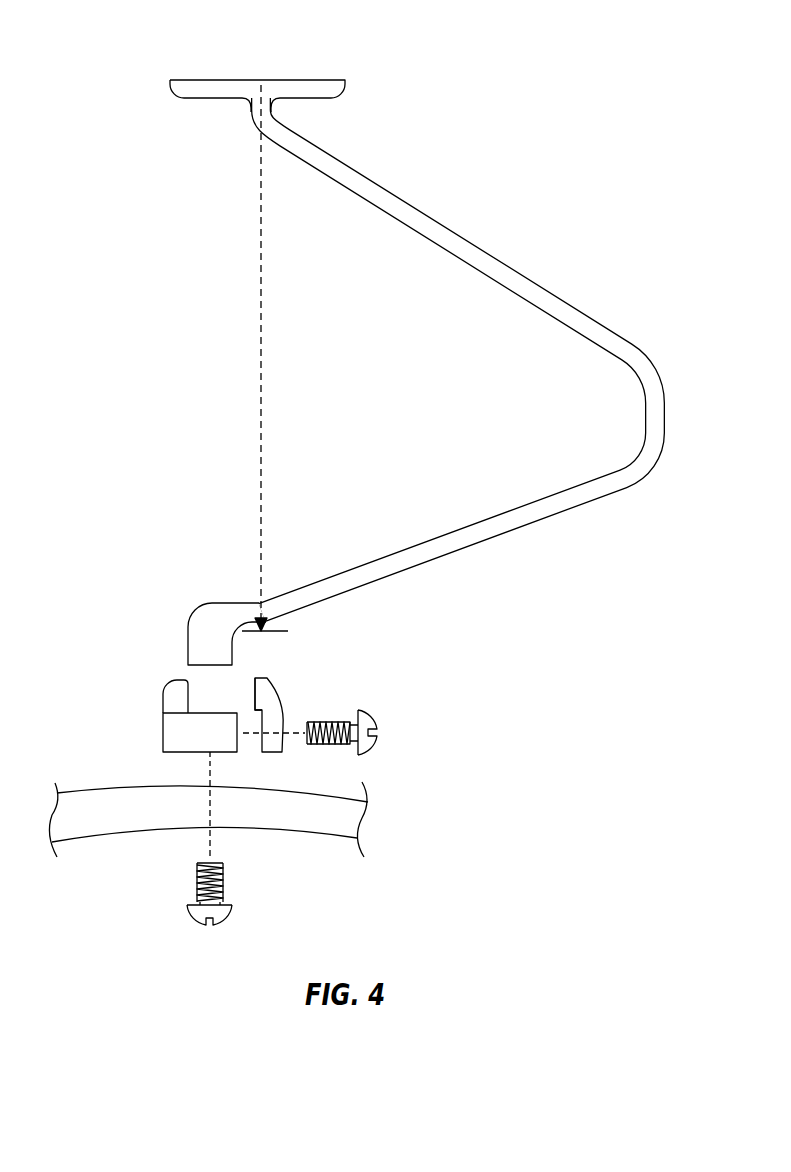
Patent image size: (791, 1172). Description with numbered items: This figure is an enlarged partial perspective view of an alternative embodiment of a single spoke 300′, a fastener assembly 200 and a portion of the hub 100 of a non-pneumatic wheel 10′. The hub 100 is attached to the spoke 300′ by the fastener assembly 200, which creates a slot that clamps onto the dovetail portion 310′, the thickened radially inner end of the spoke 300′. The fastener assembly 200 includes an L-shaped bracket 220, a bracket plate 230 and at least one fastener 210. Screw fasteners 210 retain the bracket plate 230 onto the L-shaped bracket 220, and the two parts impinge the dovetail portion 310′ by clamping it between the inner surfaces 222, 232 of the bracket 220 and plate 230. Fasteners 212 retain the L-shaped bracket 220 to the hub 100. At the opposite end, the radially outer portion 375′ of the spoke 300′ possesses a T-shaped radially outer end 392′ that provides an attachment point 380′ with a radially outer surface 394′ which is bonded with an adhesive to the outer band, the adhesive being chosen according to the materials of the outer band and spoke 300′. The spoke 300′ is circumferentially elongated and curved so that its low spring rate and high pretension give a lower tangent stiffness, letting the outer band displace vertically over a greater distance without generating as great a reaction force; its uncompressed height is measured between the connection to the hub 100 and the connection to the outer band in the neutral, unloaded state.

The non-pneumatic wheel 10′ is at (578, 60).
The hub 100 is at (280, 822).
The fastener assembly 200 is at (390, 680).
The screw fastener 210 is at (327, 722).
The fastener 212 is at (197, 883).
The L-shaped bracket 220 is at (178, 733).
The inner surface of L-shaped bracket 222 is at (186, 700).
The bracket plate 230 is at (273, 697).
The inner surface of bracket plate 232 is at (257, 697).
The spoke 300′ is at (487, 527).
The dovetail portion 310′ is at (200, 641).
The radially outer portion 375′ is at (431, 151).
The attachment point 380′ is at (258, 118).
The T-shaped radially outer end 392′ is at (346, 36).
The radially outer surface 394′ is at (234, 80).